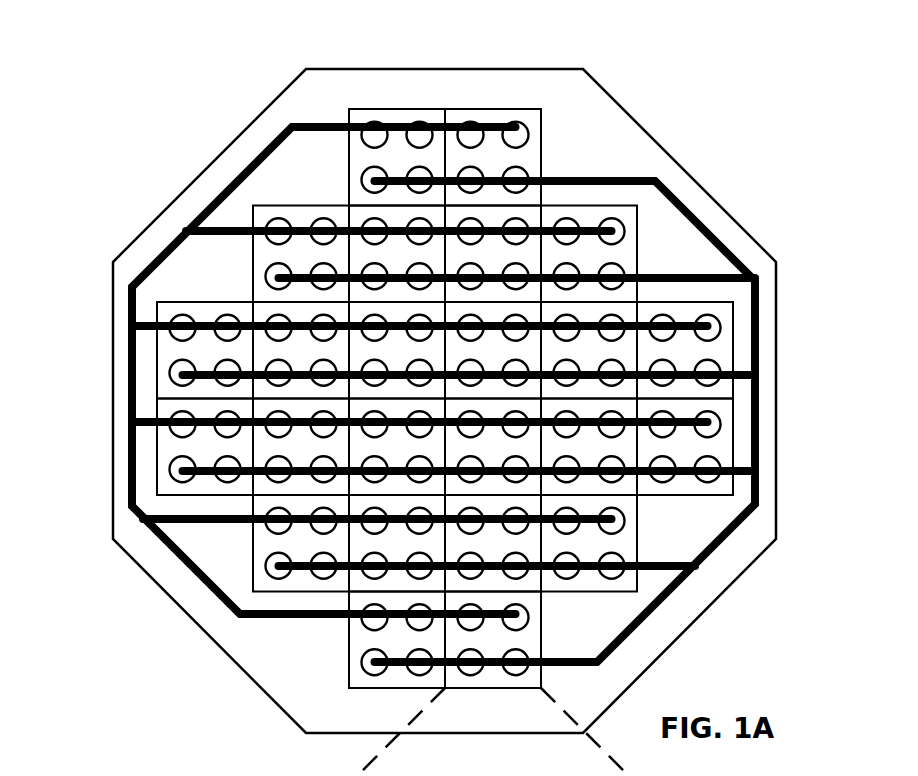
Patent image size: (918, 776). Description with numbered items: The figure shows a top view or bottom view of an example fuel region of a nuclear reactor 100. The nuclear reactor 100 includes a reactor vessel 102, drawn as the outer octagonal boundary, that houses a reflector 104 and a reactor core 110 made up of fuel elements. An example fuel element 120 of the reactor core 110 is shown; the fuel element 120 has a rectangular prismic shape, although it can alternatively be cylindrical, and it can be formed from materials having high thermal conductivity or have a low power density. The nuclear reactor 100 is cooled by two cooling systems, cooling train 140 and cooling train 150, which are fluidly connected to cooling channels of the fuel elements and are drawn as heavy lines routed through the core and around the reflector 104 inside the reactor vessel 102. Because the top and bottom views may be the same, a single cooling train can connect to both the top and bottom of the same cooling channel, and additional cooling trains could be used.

The nuclear reactor 100 is at (423, 408).
The reactor vessel 102 is at (134, 238).
The reflector 104 is at (267, 643).
The reactor core 110 is at (566, 141).
The fuel element 120 is at (536, 628).
The cooling train 140 is at (247, 166).
The cooling train 150 is at (702, 552).